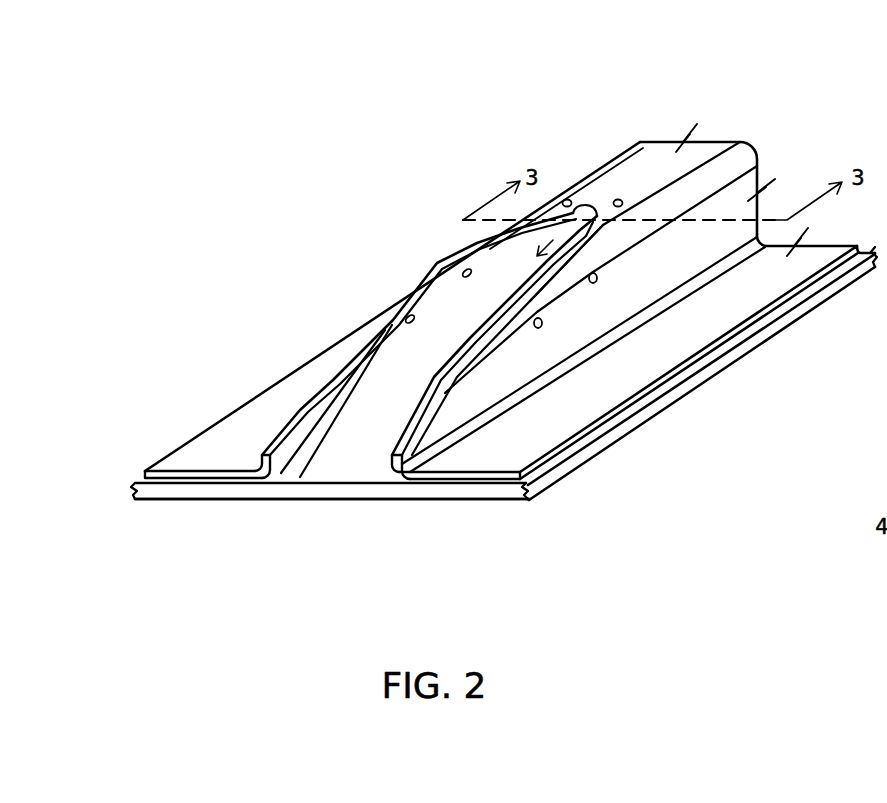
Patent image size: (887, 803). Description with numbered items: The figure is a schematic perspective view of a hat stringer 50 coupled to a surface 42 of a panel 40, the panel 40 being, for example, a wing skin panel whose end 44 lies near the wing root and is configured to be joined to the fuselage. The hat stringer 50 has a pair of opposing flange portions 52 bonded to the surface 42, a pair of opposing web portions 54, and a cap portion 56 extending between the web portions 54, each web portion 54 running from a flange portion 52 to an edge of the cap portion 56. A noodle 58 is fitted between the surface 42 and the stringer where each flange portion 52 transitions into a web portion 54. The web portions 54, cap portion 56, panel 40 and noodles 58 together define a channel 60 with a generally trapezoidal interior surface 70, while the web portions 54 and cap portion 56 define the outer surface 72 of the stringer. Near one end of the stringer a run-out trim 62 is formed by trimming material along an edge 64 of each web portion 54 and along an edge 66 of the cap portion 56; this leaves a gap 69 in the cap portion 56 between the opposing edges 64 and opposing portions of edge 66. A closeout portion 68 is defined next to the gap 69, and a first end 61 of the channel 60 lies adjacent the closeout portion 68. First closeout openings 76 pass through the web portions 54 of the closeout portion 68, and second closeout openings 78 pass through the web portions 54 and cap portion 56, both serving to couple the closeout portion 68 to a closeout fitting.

The panel 40 is at (723, 362).
The surface 42 is at (139, 470).
The end 44 is at (508, 492).
The hat stringer 50 is at (507, 93).
The flange portions 52 is at (222, 436).
The web portions 54 is at (478, 247).
The cap portion 56 is at (645, 163).
The noodle 58 is at (300, 484).
The channel 60 is at (433, 310).
The first end 61 is at (528, 482).
The run-out trim 62 is at (282, 258).
The edge 64 is at (327, 385).
The edge 66 is at (500, 233).
The closeout portion 68 is at (375, 180).
The gap 69 is at (613, 252).
The interior surface 70 is at (452, 290).
The outer surface 72 is at (653, 275).
The first closeout openings 76 is at (408, 322).
The second closeout openings 78 is at (617, 199).